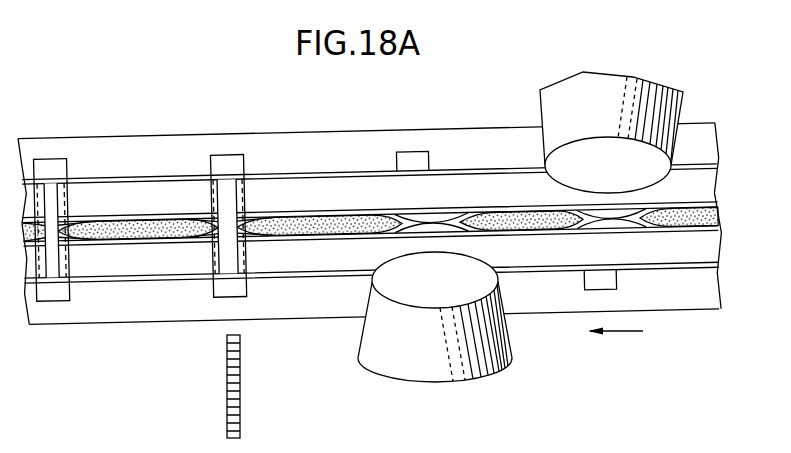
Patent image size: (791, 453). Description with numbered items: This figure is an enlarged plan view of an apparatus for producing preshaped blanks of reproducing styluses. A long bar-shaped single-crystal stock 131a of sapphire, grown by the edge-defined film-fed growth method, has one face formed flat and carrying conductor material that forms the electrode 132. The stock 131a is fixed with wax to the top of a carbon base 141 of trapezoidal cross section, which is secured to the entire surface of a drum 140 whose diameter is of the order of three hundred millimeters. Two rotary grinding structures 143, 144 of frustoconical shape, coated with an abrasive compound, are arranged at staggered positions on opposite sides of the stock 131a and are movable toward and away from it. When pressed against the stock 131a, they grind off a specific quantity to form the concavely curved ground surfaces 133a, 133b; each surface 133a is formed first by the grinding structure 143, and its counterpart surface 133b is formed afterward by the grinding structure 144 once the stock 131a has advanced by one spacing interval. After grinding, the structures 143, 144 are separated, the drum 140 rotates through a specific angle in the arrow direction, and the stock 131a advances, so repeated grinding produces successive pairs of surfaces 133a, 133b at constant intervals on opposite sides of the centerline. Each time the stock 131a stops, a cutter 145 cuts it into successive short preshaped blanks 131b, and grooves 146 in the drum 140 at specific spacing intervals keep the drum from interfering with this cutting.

The drum 140 is at (507, 130).
The carbon base 141 is at (333, 131).
The single-crystal stock 131a is at (353, 217).
The preshaped blank 131b is at (163, 245).
The electrode 132 is at (172, 221).
The concavely curved ground surface 133a is at (72, 227).
The concavely curved ground surface 133b is at (78, 240).
The rotary grinding structure 143 is at (560, 87).
The rotary grinding structure 144 is at (463, 370).
The cutter 145 is at (240, 377).
The groove 146 is at (228, 163).